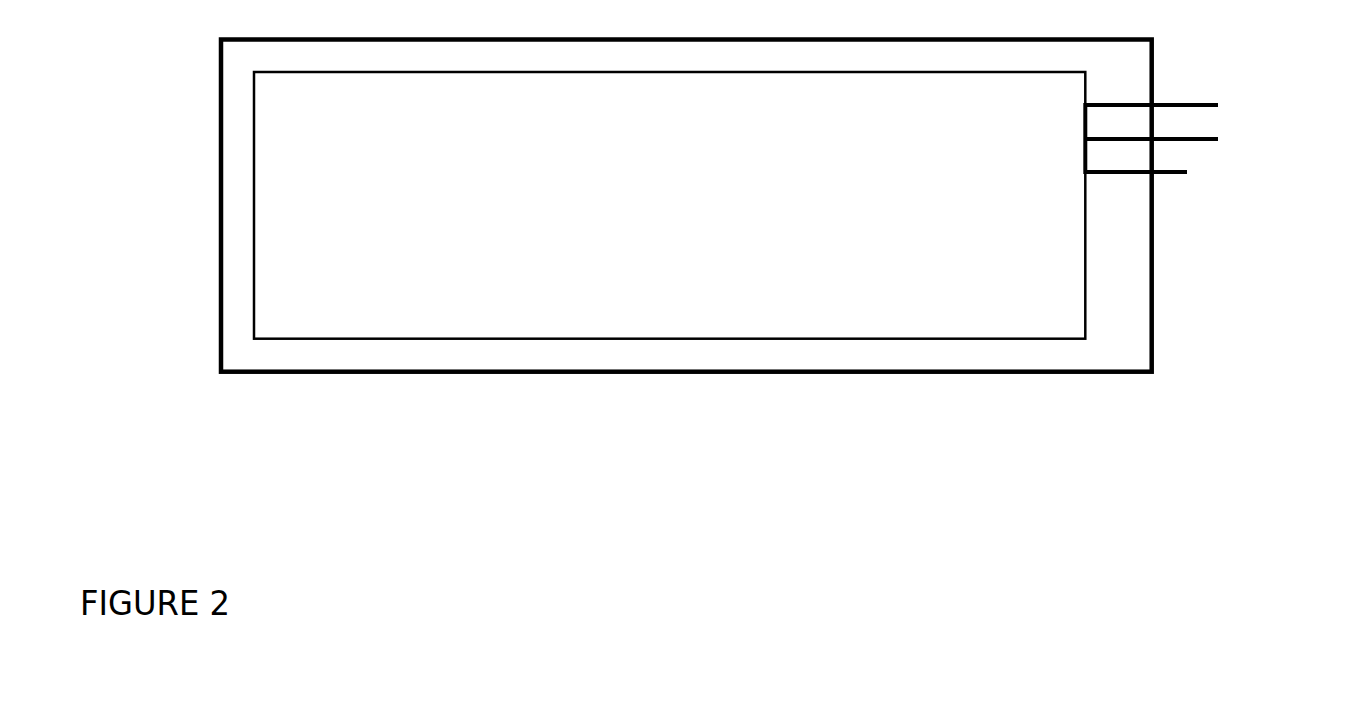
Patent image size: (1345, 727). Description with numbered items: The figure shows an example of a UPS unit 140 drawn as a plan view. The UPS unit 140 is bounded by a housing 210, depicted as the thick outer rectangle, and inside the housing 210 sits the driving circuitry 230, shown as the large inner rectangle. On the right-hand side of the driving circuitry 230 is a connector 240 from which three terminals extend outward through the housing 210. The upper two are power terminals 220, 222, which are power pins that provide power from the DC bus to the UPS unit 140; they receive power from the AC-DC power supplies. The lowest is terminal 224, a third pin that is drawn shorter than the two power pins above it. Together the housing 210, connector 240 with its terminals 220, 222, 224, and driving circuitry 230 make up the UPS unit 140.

The UPS unit 140 is at (686, 438).
The housing 210 is at (218, 108).
The power terminal 220 is at (1218, 105).
The power terminal 222 is at (1218, 139).
The terminal 224 is at (1187, 172).
The driving circuitry 230 is at (253, 175).
The connector 240 is at (1085, 139).